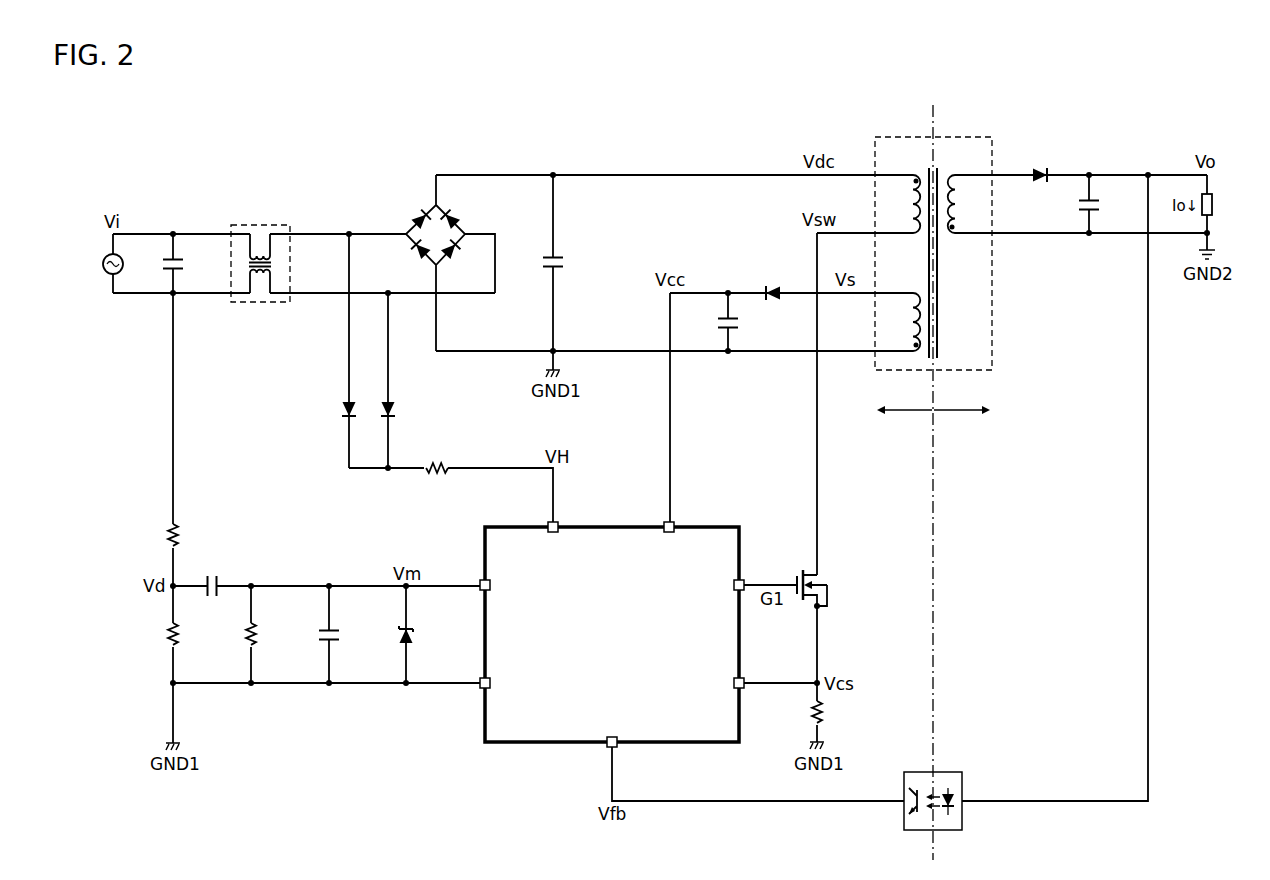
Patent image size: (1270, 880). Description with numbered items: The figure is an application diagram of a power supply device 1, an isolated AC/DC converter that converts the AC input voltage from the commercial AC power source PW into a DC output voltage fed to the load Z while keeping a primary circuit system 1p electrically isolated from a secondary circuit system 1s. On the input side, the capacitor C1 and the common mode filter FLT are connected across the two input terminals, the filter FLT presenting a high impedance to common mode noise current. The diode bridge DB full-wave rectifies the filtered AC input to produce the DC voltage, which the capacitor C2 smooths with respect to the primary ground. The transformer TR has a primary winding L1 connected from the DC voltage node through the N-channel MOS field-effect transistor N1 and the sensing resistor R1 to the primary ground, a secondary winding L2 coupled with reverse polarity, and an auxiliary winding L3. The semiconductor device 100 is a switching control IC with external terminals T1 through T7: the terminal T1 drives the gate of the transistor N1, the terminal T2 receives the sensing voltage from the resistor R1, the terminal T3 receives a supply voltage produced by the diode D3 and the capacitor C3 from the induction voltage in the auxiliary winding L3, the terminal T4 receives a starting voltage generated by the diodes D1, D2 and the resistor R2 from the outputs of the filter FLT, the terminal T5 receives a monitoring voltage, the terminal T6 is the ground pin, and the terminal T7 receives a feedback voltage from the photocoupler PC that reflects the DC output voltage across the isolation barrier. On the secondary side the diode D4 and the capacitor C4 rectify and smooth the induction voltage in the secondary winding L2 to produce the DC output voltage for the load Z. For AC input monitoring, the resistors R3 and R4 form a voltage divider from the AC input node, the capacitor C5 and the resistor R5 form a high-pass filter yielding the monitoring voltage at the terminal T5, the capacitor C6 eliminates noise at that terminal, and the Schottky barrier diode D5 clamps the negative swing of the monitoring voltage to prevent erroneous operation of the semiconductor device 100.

The power supply device 1 is at (97, 168).
The commercial AC power source PW is at (95, 264).
The capacitor C1 is at (191, 264).
The common mode filter FLT is at (259, 225).
The diode bridge DB is at (466, 215).
The capacitor C2 is at (570, 262).
The diode D1 is at (331, 408).
The diode D2 is at (408, 408).
The resistor R2 is at (436, 477).
The resistor R3 is at (155, 536).
The resistor R4 is at (155, 635).
The resistor R5 is at (270, 635).
The capacitor C5 is at (213, 579).
The capacitor C6 is at (346, 635).
The diode D5 is at (426, 635).
The semiconductor device 100 is at (614, 526).
The external terminal T1 is at (745, 583).
The external terminal T2 is at (745, 680).
The external terminal T3 is at (674, 524).
The external terminal T4 is at (548, 524).
The external terminal T5 is at (480, 583).
The external terminal T6 is at (480, 690).
The external terminal T7 is at (607, 748).
The N-channel MOS field-effect transistor N1 is at (833, 585).
The resistor R1 is at (836, 713).
The diode D3 is at (774, 285).
The capacitor C3 is at (745, 323).
The transformer TR is at (933, 239).
The primary winding L1 is at (915, 171).
The secondary winding L2 is at (952, 171).
The auxiliary winding L3 is at (900, 322).
The primary circuit system 1p is at (891, 411).
The secondary circuit system 1s is at (975, 411).
The diode D4 is at (1041, 169).
The capacitor C4 is at (1106, 205).
The load Z is at (1221, 204).
The photocoupler PC is at (958, 772).